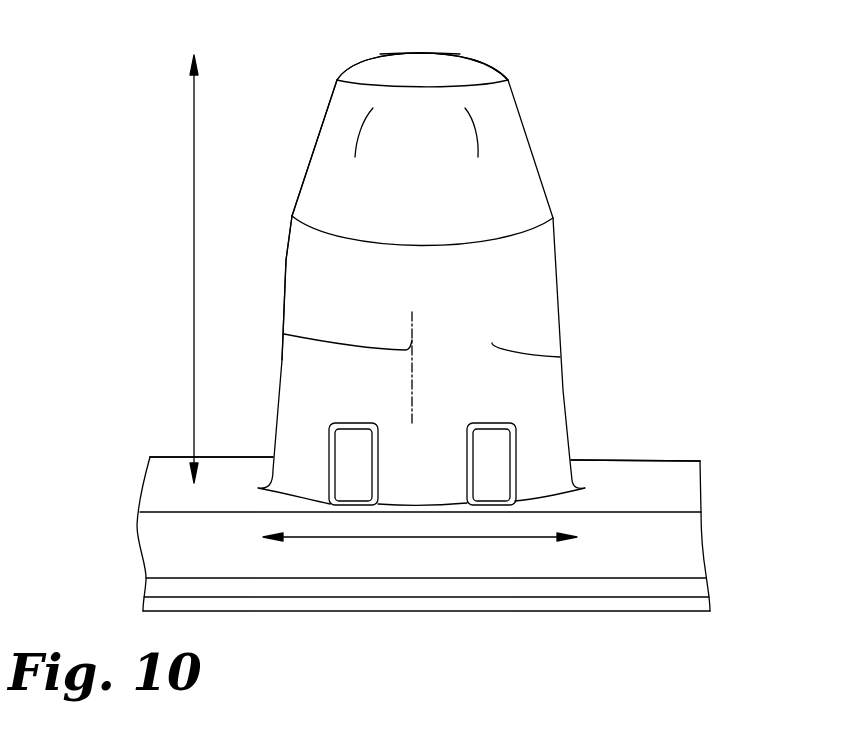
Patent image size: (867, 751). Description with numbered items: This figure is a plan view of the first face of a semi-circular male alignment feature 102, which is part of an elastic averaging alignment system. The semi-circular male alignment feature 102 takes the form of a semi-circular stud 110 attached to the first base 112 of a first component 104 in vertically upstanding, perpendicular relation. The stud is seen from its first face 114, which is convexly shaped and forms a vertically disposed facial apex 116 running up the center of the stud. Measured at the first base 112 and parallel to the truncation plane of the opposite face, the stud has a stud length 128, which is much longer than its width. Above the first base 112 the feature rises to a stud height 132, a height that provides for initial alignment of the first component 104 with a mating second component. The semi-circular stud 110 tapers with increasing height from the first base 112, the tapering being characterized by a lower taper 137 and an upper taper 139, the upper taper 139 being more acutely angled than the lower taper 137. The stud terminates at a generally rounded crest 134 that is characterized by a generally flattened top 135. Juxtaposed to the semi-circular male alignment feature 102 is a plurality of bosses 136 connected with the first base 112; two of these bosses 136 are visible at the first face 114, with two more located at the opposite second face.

The semi-circular male alignment feature 102 is at (553, 279).
The first component 104 is at (716, 555).
The semi-circular stud 110 is at (545, 180).
The first base 112 is at (647, 472).
The first face 114 is at (560, 357).
The facial apex 116 is at (284, 334).
The stud length 128 is at (435, 537).
The stud height 132 is at (192, 232).
The rounded crest 134 is at (500, 72).
The flattened top 135 is at (428, 53).
The boss 136 is at (365, 423).
The lower taper 137 is at (287, 257).
The upper taper 139 is at (318, 133).